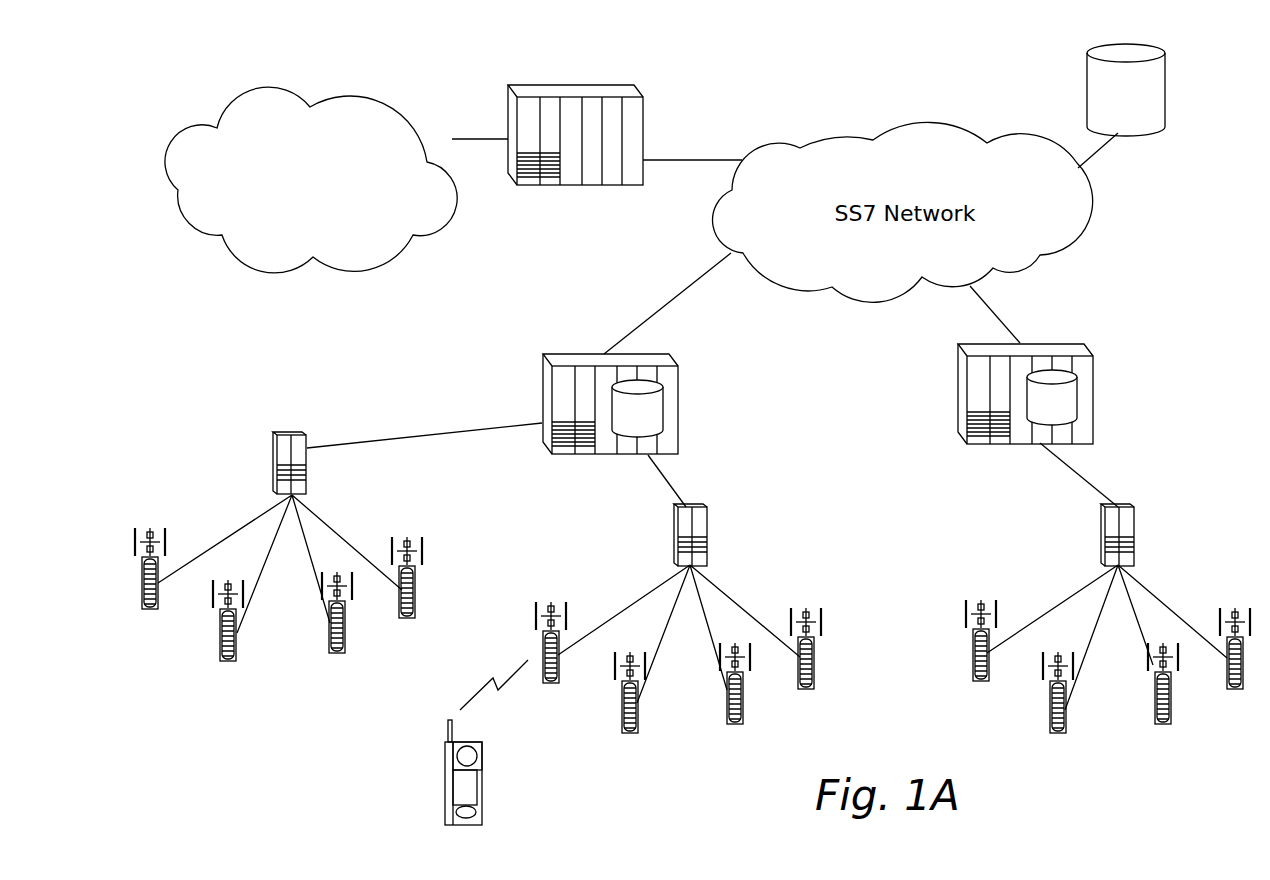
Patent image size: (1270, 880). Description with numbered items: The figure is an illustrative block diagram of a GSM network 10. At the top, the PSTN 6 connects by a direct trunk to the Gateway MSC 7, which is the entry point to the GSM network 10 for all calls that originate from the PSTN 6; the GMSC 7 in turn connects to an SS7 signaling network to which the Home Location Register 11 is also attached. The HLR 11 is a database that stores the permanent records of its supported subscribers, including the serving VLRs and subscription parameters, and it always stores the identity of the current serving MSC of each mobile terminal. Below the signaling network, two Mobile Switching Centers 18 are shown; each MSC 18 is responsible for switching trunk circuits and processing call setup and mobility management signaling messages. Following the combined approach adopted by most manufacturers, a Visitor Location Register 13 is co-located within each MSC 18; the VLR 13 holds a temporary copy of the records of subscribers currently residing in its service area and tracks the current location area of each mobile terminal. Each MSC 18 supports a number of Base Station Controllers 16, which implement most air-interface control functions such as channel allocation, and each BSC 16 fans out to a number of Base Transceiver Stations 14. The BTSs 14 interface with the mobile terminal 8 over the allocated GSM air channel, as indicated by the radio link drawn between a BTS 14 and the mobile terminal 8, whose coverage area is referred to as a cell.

The PSTN 6 is at (221, 126).
The Gateway MSC 7 is at (643, 113).
The GSM network 10 is at (806, 70).
The Home Location Register 11 is at (1165, 70).
The Mobile Switching Center 18 is at (676, 378).
The Visitor Location Register 13 is at (663, 410).
The Base Station Controller 16 is at (307, 466).
The Base Transceiver Station 14 is at (106, 562).
The mobile terminal 8 is at (408, 765).